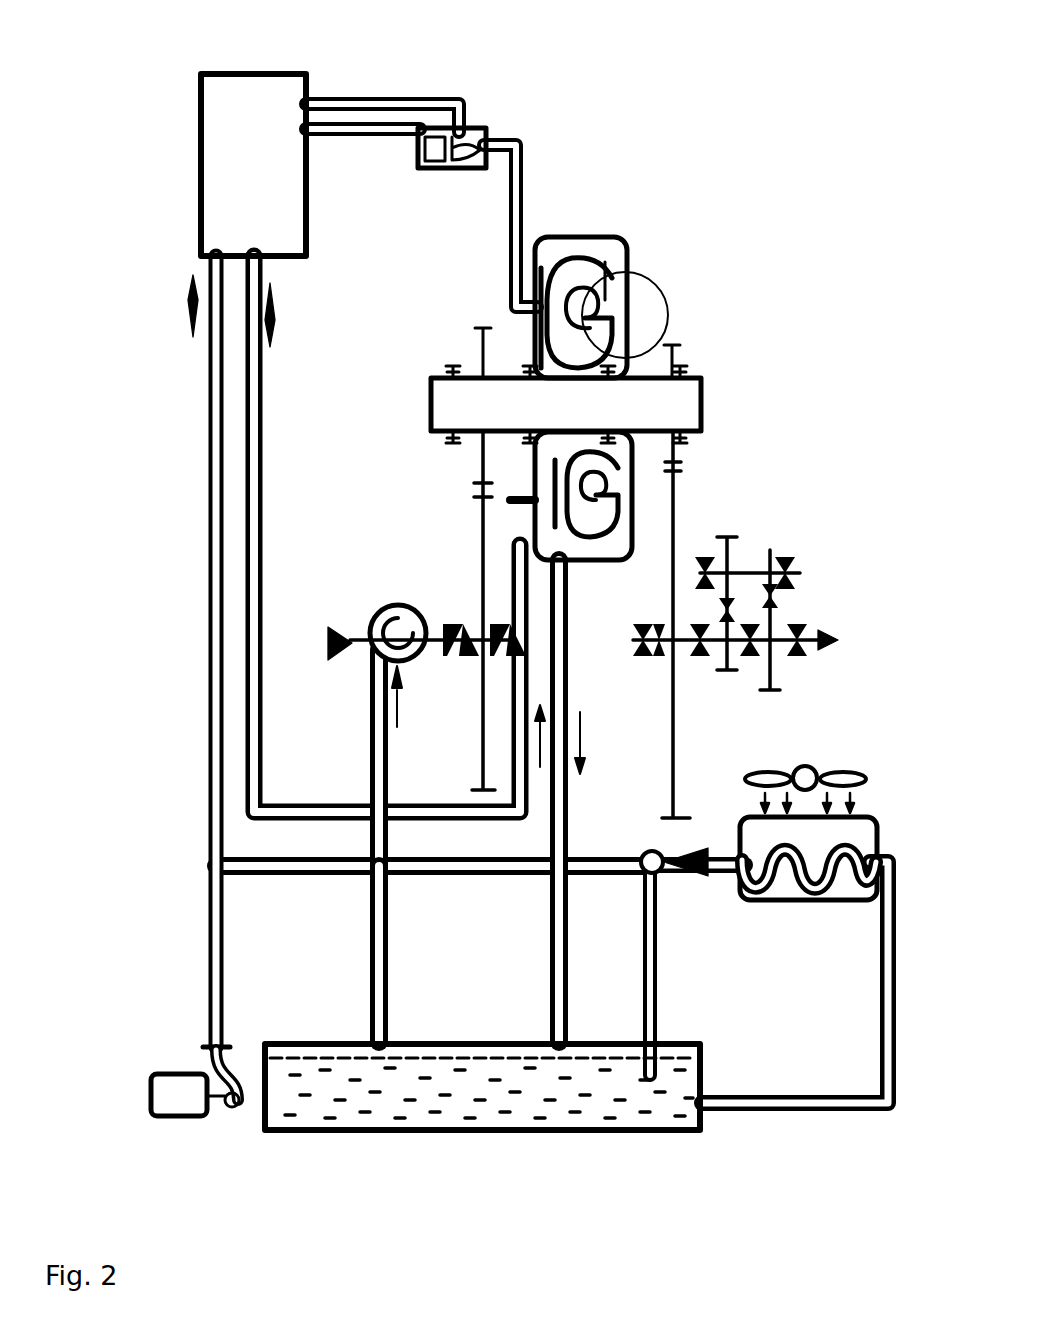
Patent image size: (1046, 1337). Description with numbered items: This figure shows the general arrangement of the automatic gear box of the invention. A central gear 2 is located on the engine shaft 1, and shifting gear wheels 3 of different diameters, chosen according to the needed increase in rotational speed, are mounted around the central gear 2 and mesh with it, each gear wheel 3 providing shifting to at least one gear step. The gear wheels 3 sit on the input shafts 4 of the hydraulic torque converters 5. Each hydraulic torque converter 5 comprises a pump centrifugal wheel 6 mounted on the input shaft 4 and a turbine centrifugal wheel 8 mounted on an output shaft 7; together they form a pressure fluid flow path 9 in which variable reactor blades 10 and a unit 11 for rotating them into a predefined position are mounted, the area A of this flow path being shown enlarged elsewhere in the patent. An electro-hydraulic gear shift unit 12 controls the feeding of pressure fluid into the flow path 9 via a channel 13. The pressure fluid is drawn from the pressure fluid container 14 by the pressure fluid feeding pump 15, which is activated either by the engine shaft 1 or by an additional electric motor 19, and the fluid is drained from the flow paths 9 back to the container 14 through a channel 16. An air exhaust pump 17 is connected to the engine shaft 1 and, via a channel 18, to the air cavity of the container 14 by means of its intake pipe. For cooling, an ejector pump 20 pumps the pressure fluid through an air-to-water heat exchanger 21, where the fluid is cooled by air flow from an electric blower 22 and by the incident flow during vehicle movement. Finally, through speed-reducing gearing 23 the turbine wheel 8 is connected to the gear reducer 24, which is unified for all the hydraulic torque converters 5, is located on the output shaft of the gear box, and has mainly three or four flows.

The engine shaft 1 is at (370, 640).
The central gear 2 is at (528, 535).
The shifting gear wheels 3 is at (540, 445).
The input shafts 4 is at (483, 457).
The hydraulic torque converters 5 is at (540, 352).
The pump centrifugal wheel 6 is at (630, 322).
The output shaft 7 is at (680, 396).
The turbine centrifugal wheel 8 is at (605, 262).
The pressure fluid flow path 9 is at (567, 252).
The area A is at (643, 262).
The variable reactor blades 10 is at (620, 493).
The unit for rotating reactor blades 11 is at (462, 128).
The electro-hydraulic gear shift unit 12 is at (230, 157).
The channel 13 is at (440, 415).
The pressure fluid container 14 is at (263, 1123).
The pressure fluid feeding pump 15 is at (205, 1050).
The channel 16 is at (575, 970).
The air exhaust pump 17 is at (372, 668).
The channel 18 is at (390, 970).
The additional electric motor 19 is at (165, 1095).
The ejector pump 20 is at (672, 860).
The air-to-water heat exchanger 21 is at (830, 880).
The electric blower 22 is at (862, 768).
The gearing 23 is at (680, 773).
The gear reducer 24 is at (775, 630).